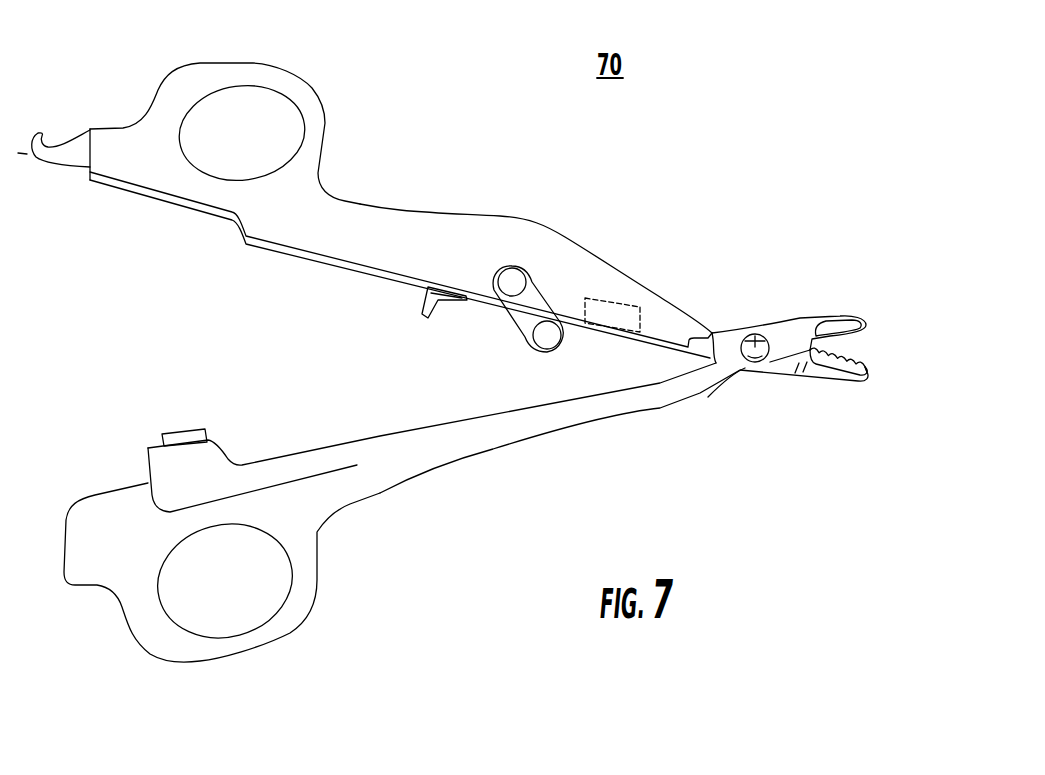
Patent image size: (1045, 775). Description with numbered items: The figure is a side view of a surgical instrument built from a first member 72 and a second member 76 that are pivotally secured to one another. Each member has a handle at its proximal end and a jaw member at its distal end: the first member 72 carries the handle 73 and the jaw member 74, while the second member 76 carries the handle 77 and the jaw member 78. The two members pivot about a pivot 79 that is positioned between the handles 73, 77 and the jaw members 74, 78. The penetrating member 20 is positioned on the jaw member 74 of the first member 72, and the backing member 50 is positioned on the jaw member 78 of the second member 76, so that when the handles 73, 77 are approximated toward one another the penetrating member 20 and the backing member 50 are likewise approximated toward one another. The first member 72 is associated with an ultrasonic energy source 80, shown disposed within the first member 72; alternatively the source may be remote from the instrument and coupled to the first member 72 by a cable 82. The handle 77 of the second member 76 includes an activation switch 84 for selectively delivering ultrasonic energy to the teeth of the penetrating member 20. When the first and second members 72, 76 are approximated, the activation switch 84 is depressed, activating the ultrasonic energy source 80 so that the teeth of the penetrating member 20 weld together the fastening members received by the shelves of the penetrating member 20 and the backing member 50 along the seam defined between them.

The first member 72 is at (365, 190).
The handle 73 is at (278, 75).
The jaw member 74 is at (818, 392).
The second member 76 is at (466, 524).
The handle 77 is at (290, 630).
The jaw member 78 is at (820, 267).
The pivot 79 is at (758, 334).
The ultrasonic energy source 80 is at (593, 242).
The cable 82 is at (53, 157).
The activation switch 84 is at (190, 430).
The backing member 50 is at (852, 317).
The penetrating member 20 is at (878, 373).